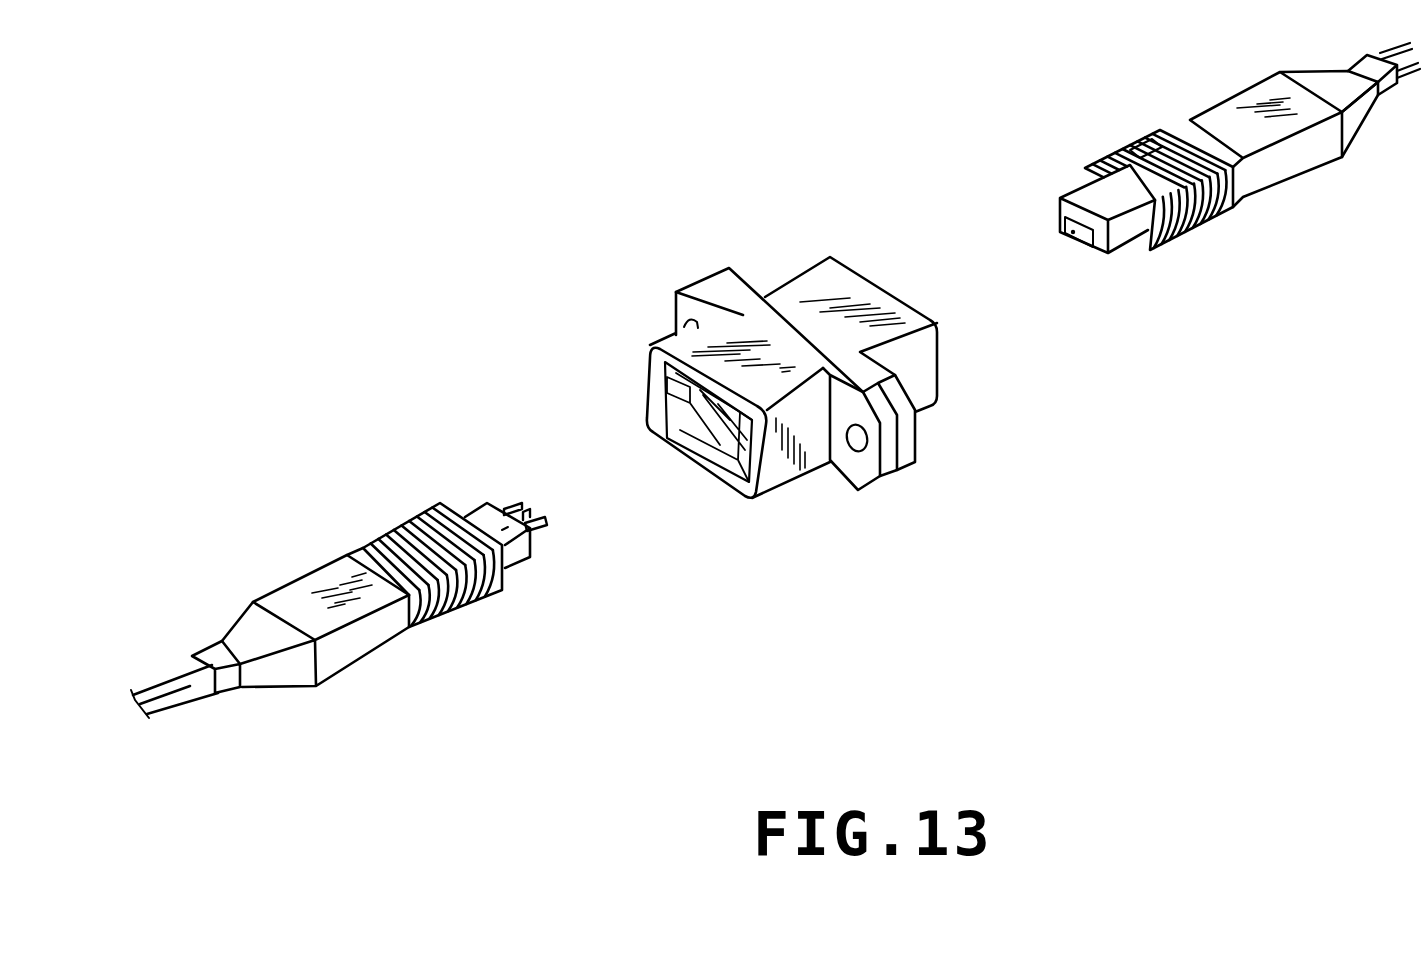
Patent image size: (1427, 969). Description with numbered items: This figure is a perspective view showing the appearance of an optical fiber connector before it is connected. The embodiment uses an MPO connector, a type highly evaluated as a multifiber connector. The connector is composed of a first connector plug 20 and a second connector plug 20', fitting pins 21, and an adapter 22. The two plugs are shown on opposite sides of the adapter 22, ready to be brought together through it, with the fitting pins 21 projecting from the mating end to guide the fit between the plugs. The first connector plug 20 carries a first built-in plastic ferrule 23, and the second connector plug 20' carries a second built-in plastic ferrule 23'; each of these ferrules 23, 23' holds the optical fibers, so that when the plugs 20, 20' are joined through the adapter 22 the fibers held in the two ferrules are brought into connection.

The first connector plug 20 is at (1252, 151).
The second connector plug 20' is at (330, 579).
The fitting pins 21 is at (518, 505).
The adapter 22 is at (727, 268).
The first built-in plastic ferrule 23 is at (1081, 160).
The second built-in plastic ferrule 23' is at (569, 477).